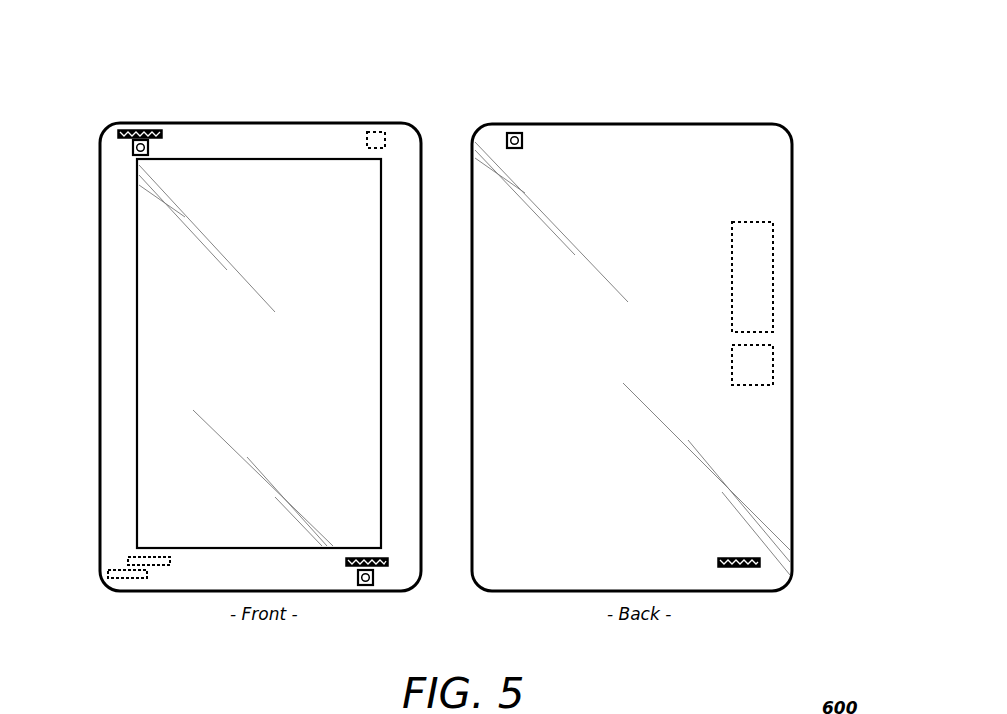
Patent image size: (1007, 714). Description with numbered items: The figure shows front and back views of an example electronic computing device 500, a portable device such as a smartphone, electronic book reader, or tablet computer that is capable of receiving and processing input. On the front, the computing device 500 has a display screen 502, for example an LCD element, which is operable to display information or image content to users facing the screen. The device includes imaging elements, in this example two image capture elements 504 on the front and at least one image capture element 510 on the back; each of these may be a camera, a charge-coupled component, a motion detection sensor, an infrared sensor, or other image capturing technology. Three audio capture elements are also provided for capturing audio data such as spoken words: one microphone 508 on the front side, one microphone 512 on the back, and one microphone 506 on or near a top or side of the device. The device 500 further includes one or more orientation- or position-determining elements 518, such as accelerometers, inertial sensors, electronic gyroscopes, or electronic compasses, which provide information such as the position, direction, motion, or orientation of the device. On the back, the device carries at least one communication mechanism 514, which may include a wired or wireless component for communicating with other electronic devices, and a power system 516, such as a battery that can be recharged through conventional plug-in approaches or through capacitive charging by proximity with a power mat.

The electronic computing device 500 is at (822, 130).
The display screen 502 is at (137, 273).
The image capture element 504 is at (133, 148).
The microphone 506 is at (153, 128).
The microphone 508 is at (382, 566).
The image capture element 510 is at (373, 132).
The microphone 512 is at (150, 566).
The communication mechanism 514 is at (773, 293).
The power system 516 is at (773, 370).
The orientation- or position-determining element 518 is at (127, 579).